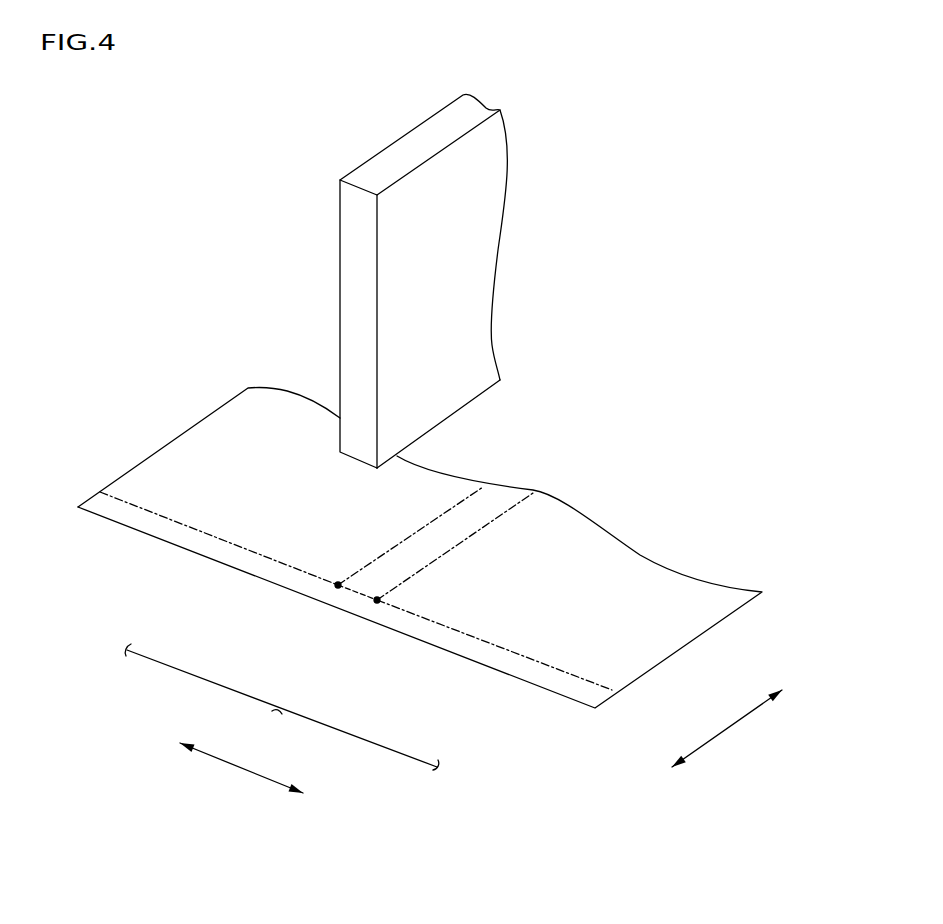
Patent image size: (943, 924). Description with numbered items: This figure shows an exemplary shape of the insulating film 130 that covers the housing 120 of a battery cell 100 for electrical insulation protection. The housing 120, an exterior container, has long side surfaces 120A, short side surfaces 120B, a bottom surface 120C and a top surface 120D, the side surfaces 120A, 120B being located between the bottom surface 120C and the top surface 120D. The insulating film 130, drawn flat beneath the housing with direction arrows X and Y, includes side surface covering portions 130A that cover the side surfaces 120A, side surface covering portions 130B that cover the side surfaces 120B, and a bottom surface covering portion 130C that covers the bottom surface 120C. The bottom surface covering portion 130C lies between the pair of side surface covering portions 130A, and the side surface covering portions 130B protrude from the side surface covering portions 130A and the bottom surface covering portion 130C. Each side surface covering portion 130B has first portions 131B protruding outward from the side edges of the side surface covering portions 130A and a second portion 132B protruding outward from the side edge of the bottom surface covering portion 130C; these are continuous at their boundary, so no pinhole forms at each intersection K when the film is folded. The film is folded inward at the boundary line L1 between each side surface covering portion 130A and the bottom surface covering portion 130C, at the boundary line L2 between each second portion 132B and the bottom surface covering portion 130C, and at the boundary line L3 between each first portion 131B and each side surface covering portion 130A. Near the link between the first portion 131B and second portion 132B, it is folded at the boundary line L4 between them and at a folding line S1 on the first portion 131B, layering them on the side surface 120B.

The battery cell 100 is at (338, 122).
The housing 120 is at (480, 175).
The side surfaces 120A is at (466, 267).
The side surfaces 120B is at (355, 277).
The bottom surface 120C is at (498, 395).
The top surface 120D is at (422, 135).
The insulating film 130 is at (727, 500).
The side surface covering portions 130A is at (193, 455).
The side surface covering portions 130B is at (282, 707).
The bottom surface covering portion 130C is at (504, 492).
The first portions 131B is at (232, 551).
The second portion 132B is at (330, 594).
The boundary line L1 is at (460, 492).
The boundary line L2 is at (346, 602).
The boundary line L3 is at (157, 512).
The boundary line L4 is at (322, 596).
The intersection K is at (338, 585).
The folding line S1 is at (308, 590).
The X direction X is at (727, 731).
The Y direction Y is at (240, 770).